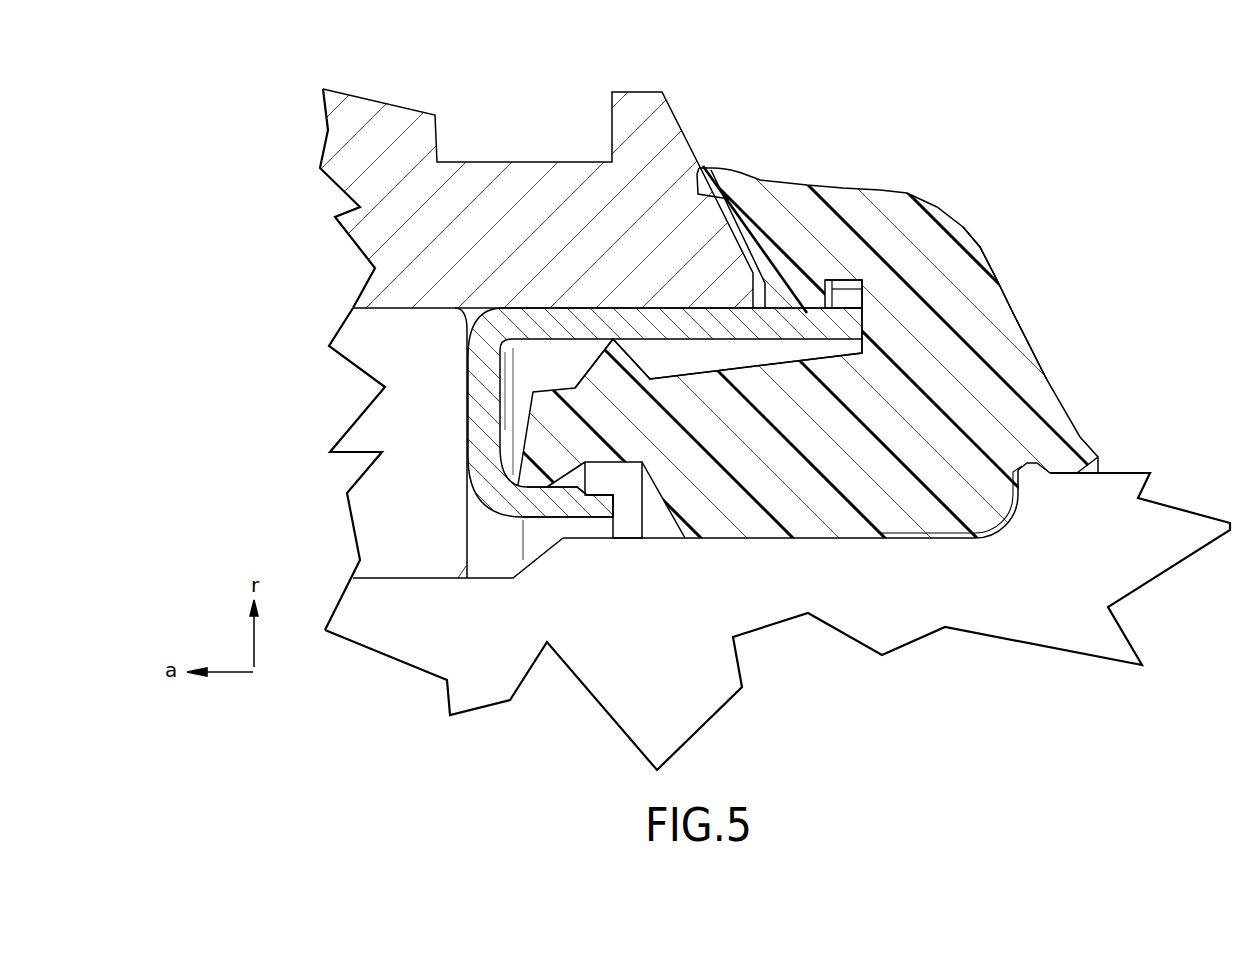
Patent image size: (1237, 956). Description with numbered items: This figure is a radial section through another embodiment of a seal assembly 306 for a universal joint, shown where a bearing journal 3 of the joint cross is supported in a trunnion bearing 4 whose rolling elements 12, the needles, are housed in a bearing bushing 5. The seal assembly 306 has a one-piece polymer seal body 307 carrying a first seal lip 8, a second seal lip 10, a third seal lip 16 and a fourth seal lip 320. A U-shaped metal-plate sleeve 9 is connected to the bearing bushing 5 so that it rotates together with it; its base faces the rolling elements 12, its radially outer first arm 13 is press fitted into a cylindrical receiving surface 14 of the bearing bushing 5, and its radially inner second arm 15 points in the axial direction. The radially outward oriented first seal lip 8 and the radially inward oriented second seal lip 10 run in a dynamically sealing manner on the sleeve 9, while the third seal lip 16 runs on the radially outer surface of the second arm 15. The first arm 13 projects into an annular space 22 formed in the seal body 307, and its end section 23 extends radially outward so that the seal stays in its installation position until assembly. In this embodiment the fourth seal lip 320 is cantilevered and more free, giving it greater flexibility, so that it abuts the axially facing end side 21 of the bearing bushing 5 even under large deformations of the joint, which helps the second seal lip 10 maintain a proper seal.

The bearing journal 3 is at (645, 708).
The trunnion bearing 4 is at (320, 398).
The bearing bushing 5 is at (353, 117).
The first seal lip 8 is at (613, 337).
The sleeve 9 is at (683, 320).
The second seal lip 10 is at (807, 312).
The rolling elements 12 is at (413, 548).
The first arm 13 is at (550, 320).
The cylindrical receiving surface 14 is at (425, 313).
The second arm 15 is at (533, 502).
The third seal lip 16 is at (542, 487).
The end side 21 is at (730, 222).
The annular space 22 is at (847, 300).
The end section 23 is at (832, 283).
The seal assembly 306 is at (967, 187).
The seal body 307 is at (963, 267).
The fourth seal lip 320 is at (716, 178).